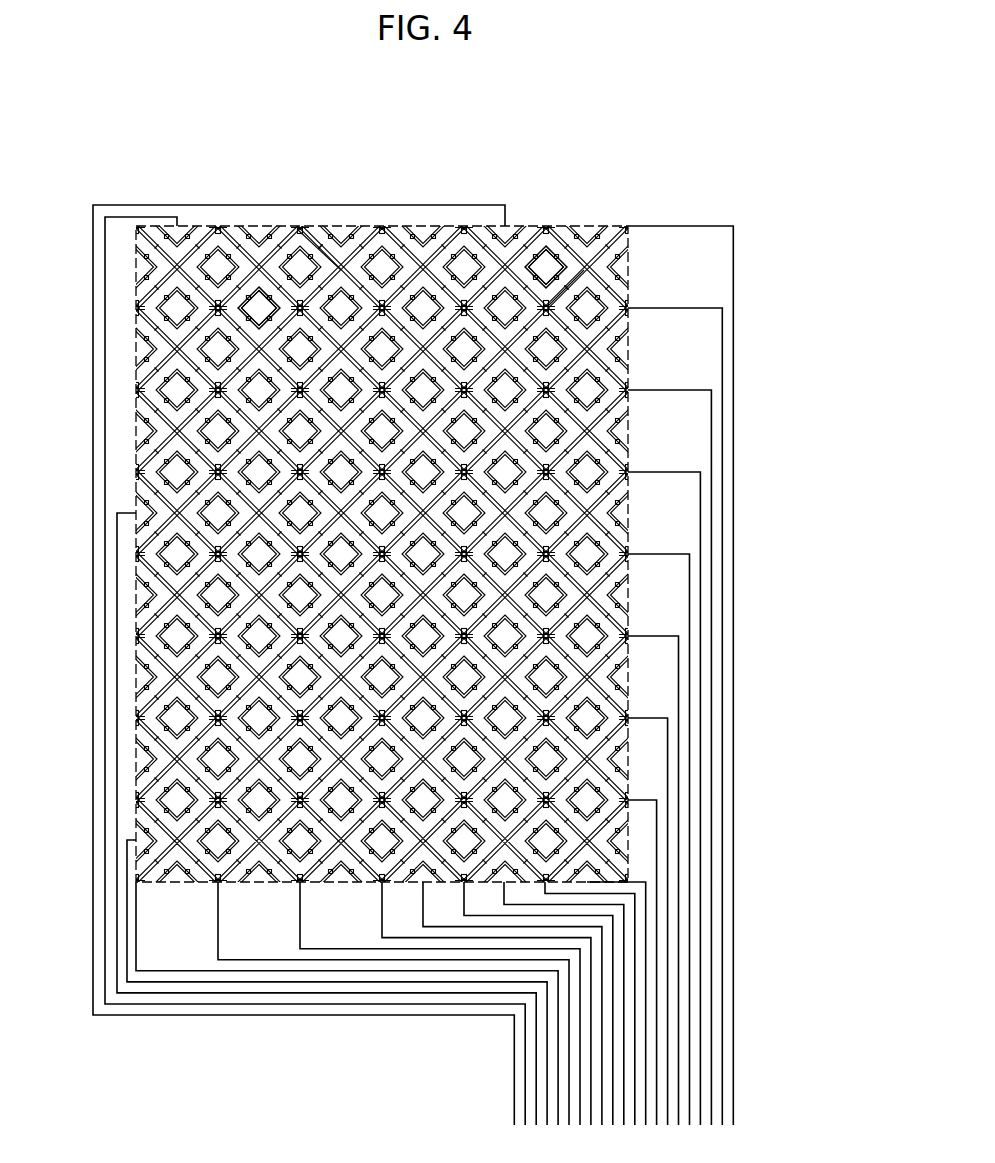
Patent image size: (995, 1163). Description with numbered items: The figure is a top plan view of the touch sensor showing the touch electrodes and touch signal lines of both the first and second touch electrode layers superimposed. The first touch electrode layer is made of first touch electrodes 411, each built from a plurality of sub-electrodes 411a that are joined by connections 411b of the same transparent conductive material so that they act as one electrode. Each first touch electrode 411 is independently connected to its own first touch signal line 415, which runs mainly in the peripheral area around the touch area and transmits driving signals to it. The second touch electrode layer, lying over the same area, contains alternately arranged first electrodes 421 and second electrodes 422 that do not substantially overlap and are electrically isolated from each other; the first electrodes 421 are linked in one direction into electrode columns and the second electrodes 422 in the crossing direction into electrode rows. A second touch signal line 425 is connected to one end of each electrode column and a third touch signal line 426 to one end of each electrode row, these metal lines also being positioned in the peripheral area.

The first touch electrode 411 is at (392, 521).
The sub-electrode 411a is at (547, 260).
The connection 411b is at (567, 287).
The first touch signal line 415 is at (93, 312).
The first electrode 421 is at (258, 277).
The second electrode 422 is at (307, 240).
The second touch signal line 425 is at (192, 972).
The third touch signal line 426 is at (735, 265).